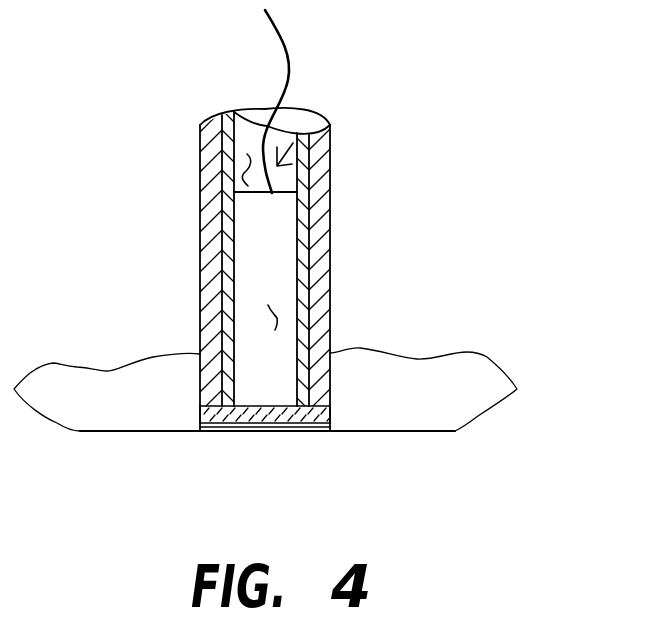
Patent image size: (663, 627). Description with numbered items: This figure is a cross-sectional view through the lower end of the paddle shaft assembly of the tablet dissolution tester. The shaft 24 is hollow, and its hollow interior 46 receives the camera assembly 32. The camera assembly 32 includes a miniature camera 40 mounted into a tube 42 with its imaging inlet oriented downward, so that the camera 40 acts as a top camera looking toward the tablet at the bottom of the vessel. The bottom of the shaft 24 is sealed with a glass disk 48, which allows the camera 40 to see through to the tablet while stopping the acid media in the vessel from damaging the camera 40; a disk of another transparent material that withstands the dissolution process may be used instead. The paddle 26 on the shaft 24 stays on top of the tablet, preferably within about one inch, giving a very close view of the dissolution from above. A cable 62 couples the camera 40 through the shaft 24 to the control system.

The shaft 24 is at (332, 252).
The paddle 26 is at (492, 360).
The camera assembly 32 is at (290, 130).
The miniature camera 40 is at (275, 315).
The tube 42 is at (221, 234).
The hollow interior 46 is at (240, 167).
The glass disk 48 is at (273, 424).
The cable 62 is at (290, 63).